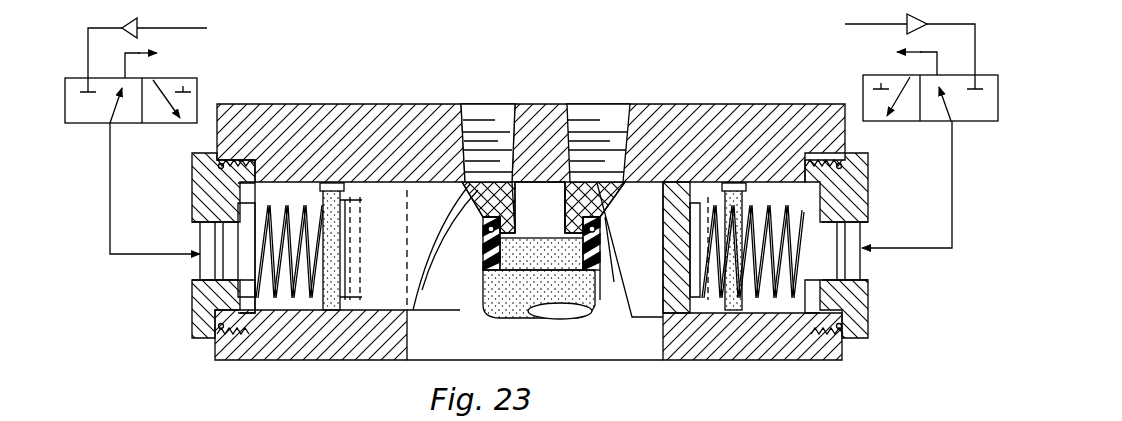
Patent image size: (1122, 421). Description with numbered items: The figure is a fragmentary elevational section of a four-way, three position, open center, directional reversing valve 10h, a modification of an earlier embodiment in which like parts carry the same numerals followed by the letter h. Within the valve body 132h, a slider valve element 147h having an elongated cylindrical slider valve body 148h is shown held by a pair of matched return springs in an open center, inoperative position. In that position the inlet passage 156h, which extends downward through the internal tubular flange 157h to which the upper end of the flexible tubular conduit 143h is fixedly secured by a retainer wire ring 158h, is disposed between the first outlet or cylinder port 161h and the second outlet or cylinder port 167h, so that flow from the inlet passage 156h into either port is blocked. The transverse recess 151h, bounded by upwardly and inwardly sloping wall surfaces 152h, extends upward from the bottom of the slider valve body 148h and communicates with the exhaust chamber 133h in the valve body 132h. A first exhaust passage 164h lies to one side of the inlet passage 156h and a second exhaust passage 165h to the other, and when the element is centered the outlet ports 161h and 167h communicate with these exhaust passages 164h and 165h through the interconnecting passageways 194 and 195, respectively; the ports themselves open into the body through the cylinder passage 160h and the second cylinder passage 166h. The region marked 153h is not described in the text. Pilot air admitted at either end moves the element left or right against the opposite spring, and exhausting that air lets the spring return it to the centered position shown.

The four-way, three position, open center, directional reversing valve 10h is at (250, 100).
The valve body 132h is at (380, 103).
The slider valve element 147h is at (347, 190).
The slider valve body 148h is at (380, 320).
The exhaust chamber 133h is at (648, 360).
The transverse recess 151h is at (606, 282).
The sloping wall surfaces 152h is at (474, 262).
The valve seat 153h is at (540, 162).
The inlet passage 156h is at (522, 240).
The internal tubular flange 157h is at (518, 306).
The retainer wire ring 158h is at (598, 238).
The cylinder passage 160h is at (512, 185).
The first outlet or cylinder port 161h is at (472, 140).
The first exhaust passage 164h is at (408, 180).
The second exhaust passage 165h is at (677, 185).
The second cylinder passage 166h is at (612, 200).
The second outlet or cylinder port 167h is at (592, 140).
The interconnecting passageway 194 is at (420, 178).
The interconnecting passageway 195 is at (654, 228).
The flexible tubular conduit 143h is at (483, 300).